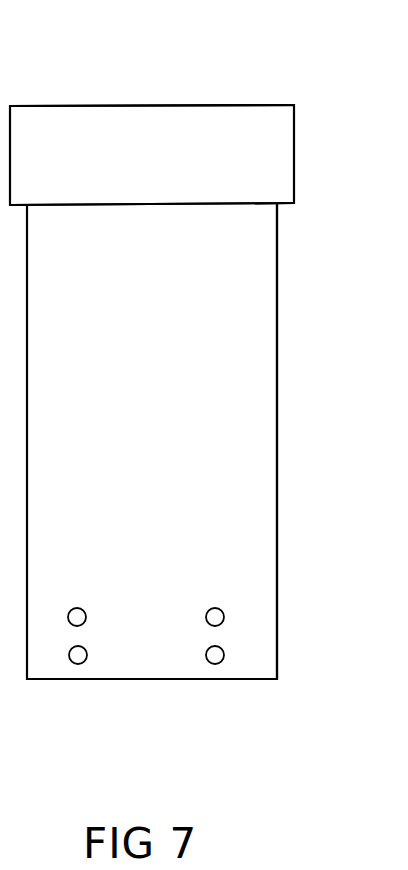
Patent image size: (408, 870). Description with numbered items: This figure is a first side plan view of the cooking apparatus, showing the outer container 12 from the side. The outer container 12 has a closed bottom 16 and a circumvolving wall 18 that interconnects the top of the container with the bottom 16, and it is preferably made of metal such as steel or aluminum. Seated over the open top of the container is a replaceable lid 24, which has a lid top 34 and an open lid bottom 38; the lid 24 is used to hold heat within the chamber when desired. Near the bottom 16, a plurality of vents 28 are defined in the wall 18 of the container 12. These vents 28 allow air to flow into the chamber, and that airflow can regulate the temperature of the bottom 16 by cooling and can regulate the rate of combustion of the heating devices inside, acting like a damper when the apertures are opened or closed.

The outer container 12 is at (301, 493).
The closed bottom 16 is at (280, 679).
The circumvolving wall 18 is at (240, 382).
The replaceable lid 24 is at (283, 153).
The vents 28 is at (80, 623).
The lid top 34 is at (230, 103).
The open lid bottom 38 is at (278, 208).